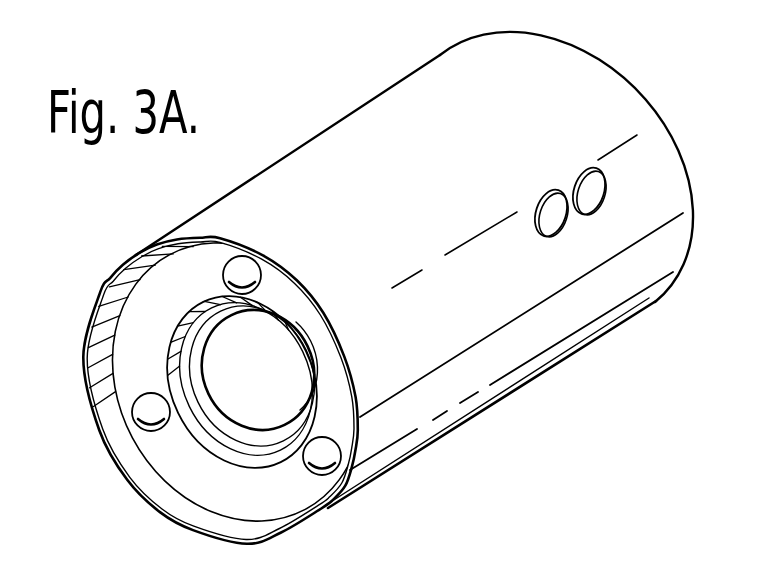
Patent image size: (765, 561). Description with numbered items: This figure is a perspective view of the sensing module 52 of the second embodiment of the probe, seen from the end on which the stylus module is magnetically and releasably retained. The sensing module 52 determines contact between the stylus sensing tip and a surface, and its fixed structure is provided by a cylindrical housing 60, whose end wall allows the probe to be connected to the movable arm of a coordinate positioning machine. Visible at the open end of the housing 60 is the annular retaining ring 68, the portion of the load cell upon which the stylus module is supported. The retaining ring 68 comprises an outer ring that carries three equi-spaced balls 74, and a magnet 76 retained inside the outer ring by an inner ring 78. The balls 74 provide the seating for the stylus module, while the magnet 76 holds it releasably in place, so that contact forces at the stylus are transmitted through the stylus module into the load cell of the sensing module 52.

The sensing module 52 is at (658, 79).
The cylindrical housing 60 is at (335, 137).
The annular retaining ring 68 is at (292, 500).
The balls 74 is at (327, 453).
The magnet 76 is at (297, 350).
The inner ring 78 is at (190, 358).